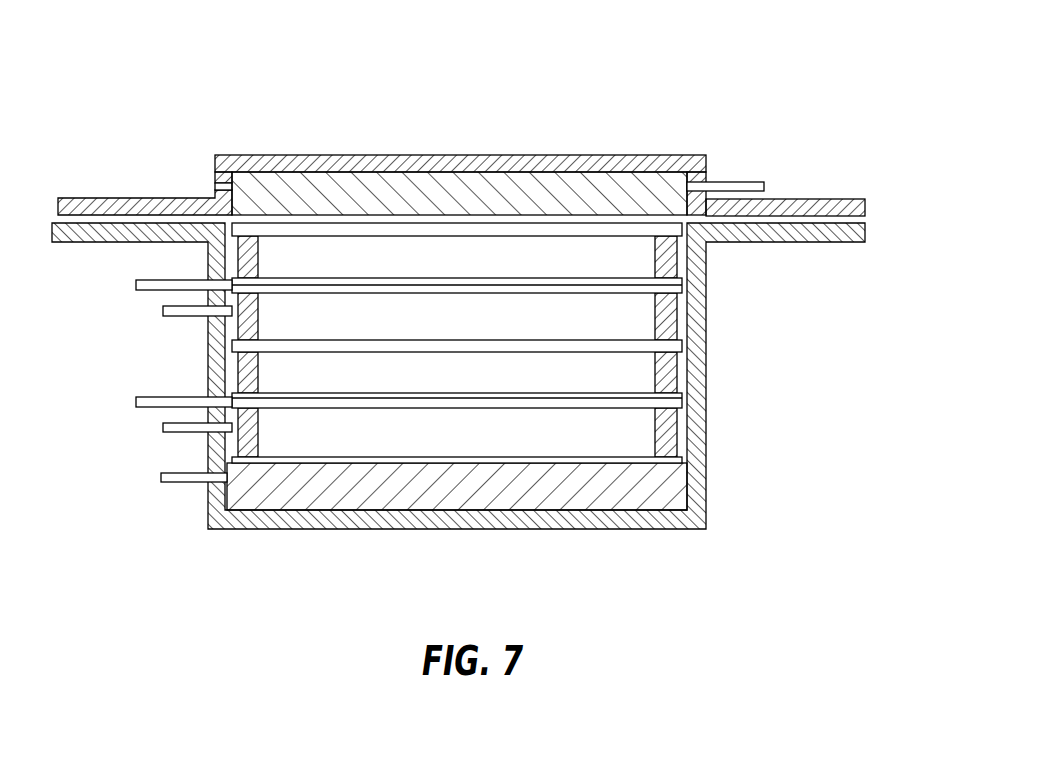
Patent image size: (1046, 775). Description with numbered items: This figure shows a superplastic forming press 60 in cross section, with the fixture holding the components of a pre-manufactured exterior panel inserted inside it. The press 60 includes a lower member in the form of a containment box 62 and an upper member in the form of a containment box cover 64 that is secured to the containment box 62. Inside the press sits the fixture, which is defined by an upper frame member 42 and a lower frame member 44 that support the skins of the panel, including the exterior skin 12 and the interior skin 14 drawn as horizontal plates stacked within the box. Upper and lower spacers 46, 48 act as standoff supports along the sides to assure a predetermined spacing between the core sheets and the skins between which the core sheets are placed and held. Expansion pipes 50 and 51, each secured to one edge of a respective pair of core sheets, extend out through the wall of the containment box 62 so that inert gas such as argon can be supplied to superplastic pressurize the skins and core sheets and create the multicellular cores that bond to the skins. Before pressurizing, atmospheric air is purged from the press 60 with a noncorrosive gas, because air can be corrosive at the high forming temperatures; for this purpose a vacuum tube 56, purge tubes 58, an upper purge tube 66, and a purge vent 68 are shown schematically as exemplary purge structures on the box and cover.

The superplastic forming press 60 is at (721, 106).
The containment box 62 is at (707, 447).
The containment box cover 64 is at (490, 163).
The upper purge tube 66 is at (728, 183).
The purge vent 68 is at (214, 186).
The upper frame member 42 is at (272, 207).
The lower frame member 44 is at (590, 515).
The exterior skin 12 is at (363, 230).
The interior skin 14 is at (308, 340).
The upper spacer 46 is at (655, 265).
The lower spacer 48 is at (655, 318).
The expansion pipe 50 is at (185, 278).
The expansion pipe 51 is at (185, 395).
The vacuum tube 56 is at (186, 483).
The purge tubes 58 is at (186, 318).